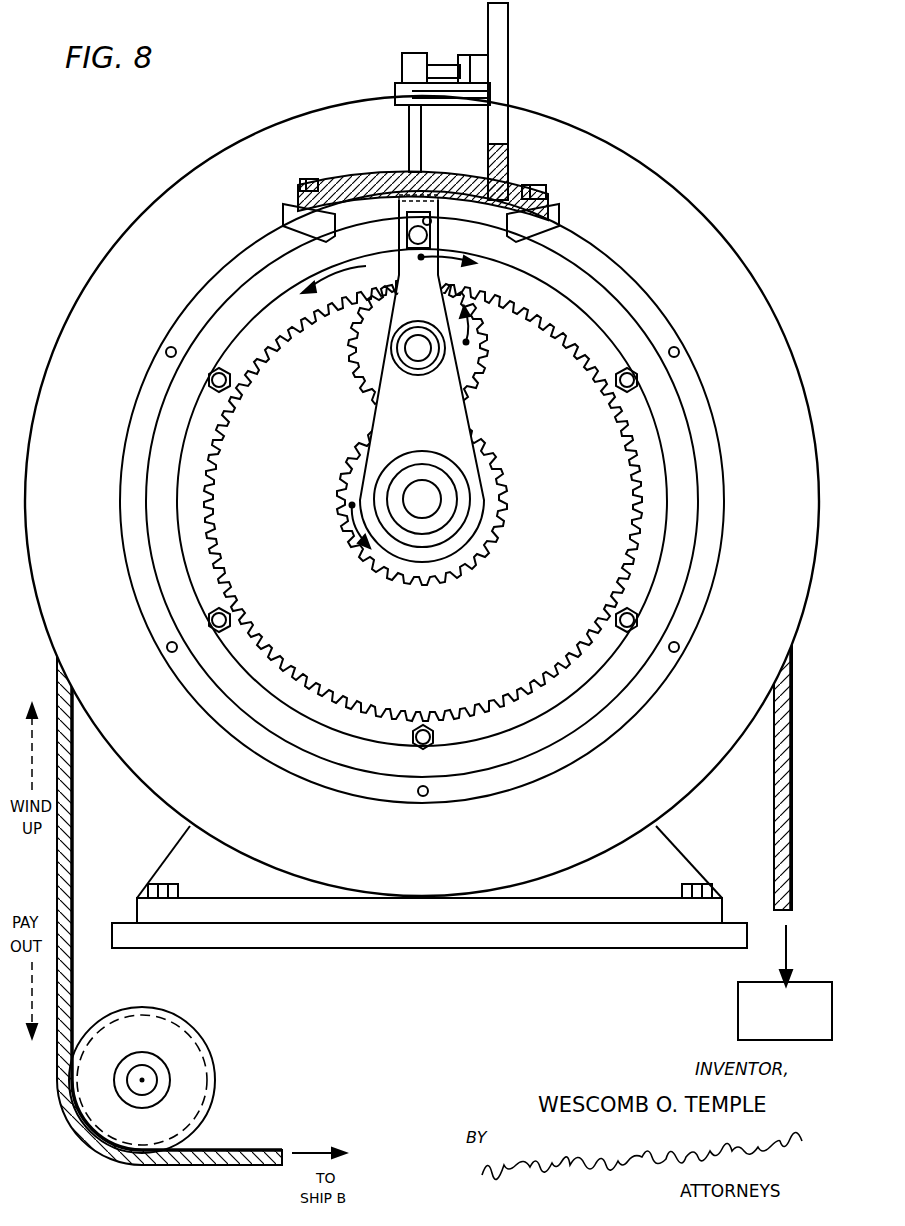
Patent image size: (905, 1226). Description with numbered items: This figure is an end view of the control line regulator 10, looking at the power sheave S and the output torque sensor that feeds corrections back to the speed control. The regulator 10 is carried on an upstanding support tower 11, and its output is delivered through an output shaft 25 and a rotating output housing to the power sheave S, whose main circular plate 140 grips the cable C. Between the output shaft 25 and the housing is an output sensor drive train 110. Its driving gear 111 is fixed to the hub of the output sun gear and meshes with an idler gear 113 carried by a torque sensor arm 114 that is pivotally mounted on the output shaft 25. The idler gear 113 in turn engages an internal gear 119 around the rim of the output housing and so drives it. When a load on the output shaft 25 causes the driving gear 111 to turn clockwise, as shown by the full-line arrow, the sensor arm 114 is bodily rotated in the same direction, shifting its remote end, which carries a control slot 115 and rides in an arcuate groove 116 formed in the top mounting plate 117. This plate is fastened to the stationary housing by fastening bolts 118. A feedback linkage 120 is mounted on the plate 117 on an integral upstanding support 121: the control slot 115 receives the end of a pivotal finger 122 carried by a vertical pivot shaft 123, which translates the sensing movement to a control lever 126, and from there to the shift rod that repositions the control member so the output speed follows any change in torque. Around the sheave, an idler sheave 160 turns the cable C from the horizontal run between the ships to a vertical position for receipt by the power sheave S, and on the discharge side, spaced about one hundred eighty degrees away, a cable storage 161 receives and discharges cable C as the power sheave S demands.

The control line regulator 10 is at (404, 972).
The upstanding support tower 11 is at (178, 856).
The output shaft 25 is at (430, 500).
The output sensor drive train 110 is at (326, 418).
The driving gear 111 is at (490, 505).
The idler gear 113 is at (356, 376).
The torque sensor arm 114 is at (446, 388).
The control slot 115 is at (431, 222).
The arcuate groove 116 is at (505, 212).
The top mounting plate 117 is at (506, 178).
The fastening bolts 118 is at (548, 190).
The internal gear 119 is at (318, 306).
The feedback linkage 120 is at (288, 70).
The upstanding support 121 is at (504, 30).
The pivotal finger 122 is at (410, 235).
The vertical pivot shaft 123 is at (411, 140).
The control lever 126 is at (416, 58).
The main circular plate 140 is at (136, 238).
The idler sheave 160 is at (200, 1062).
The cable storage 161 is at (740, 992).
The power sheave S is at (718, 182).
The cable C is at (774, 810).